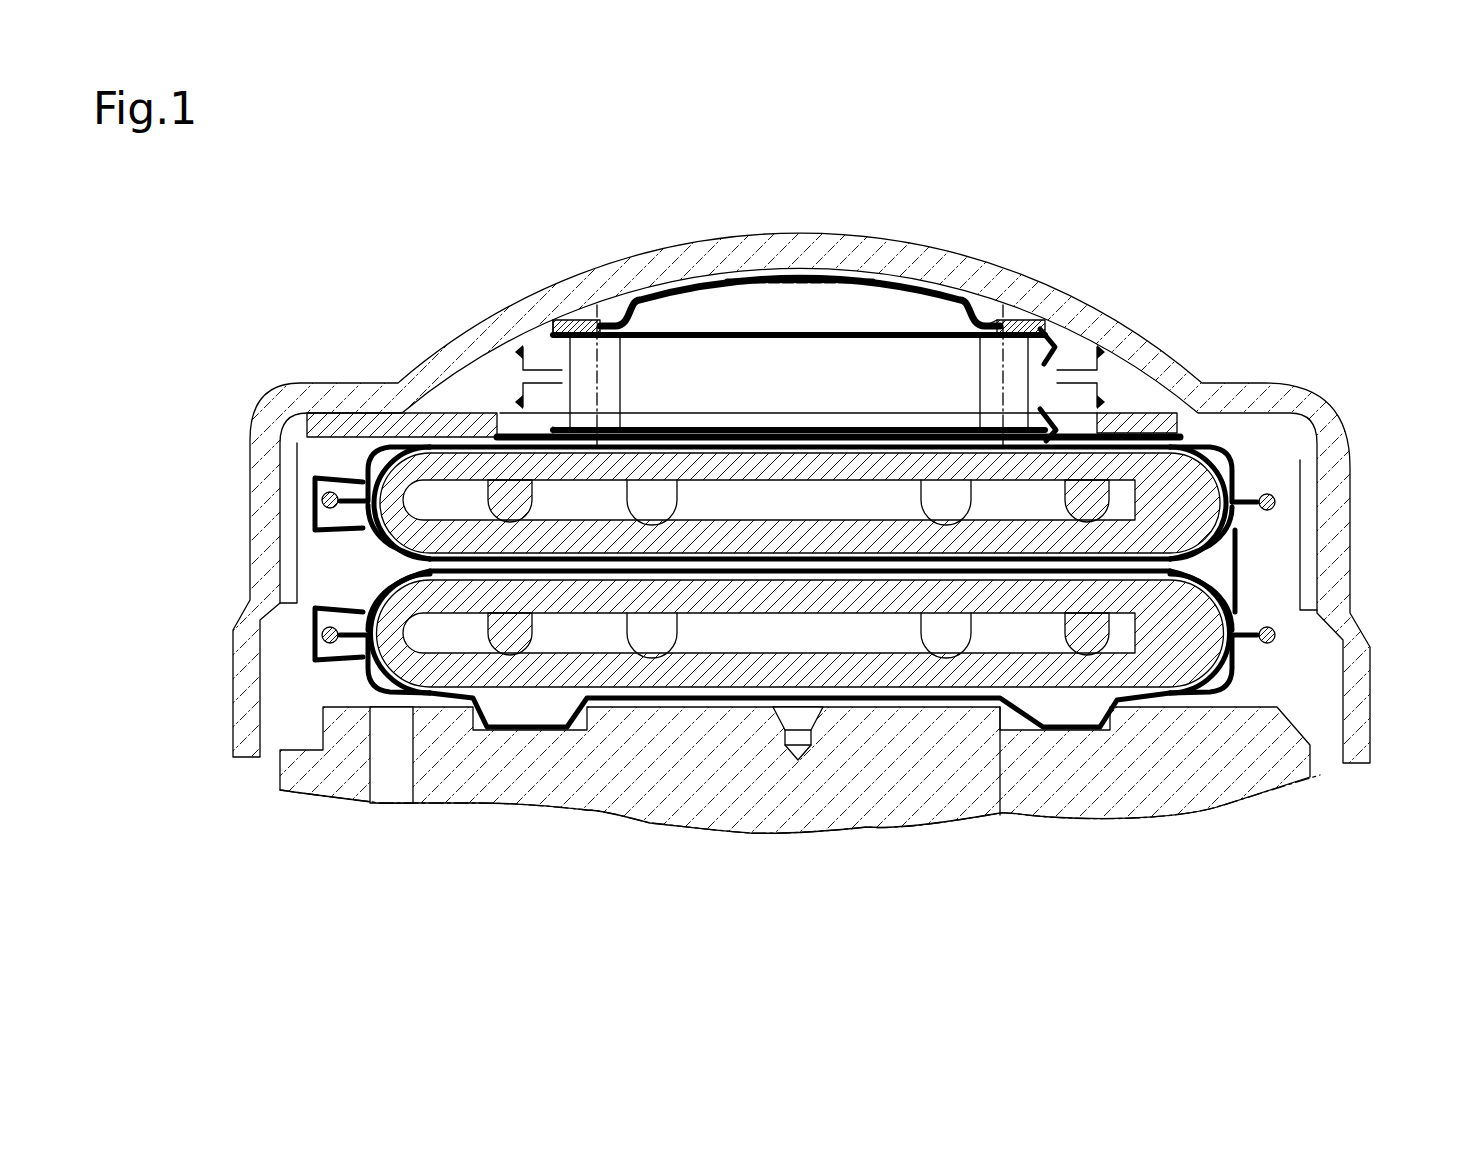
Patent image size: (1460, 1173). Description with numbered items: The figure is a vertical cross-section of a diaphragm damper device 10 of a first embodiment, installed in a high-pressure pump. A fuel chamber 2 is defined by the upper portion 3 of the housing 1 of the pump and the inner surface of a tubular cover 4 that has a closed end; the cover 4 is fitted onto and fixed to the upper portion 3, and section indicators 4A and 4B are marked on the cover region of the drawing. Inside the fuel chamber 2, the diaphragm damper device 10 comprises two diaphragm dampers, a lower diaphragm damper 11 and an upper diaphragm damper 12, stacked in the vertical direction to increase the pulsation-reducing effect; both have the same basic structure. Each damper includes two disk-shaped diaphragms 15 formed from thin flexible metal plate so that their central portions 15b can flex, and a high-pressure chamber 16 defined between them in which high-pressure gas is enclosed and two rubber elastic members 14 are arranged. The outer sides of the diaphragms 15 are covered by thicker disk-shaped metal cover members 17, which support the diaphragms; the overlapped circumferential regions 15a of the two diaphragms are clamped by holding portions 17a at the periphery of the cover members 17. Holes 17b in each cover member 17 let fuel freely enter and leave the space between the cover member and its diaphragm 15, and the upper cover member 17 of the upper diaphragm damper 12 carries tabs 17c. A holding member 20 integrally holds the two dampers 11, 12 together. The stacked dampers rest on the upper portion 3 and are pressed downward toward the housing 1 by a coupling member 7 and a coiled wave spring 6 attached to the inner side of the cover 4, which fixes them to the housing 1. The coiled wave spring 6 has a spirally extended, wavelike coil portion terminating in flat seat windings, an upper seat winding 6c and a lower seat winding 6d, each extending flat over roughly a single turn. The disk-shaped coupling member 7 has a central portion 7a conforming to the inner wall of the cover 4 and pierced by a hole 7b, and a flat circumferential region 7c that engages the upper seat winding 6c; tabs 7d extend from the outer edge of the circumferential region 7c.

The housing 1 is at (1027, 803).
The fuel chamber 2 is at (1300, 663).
The upper portion 3 is at (1253, 693).
The tubular cover 4 is at (850, 247).
The section line 4A is at (810, 357).
The section line 4B is at (810, 396).
The coiled wave spring 6 is at (678, 327).
The upper seat winding 6c is at (552, 330).
The lower seat winding 6d is at (503, 423).
The coupling member 7 is at (598, 305).
The central portion 7a is at (912, 292).
The hole 7b is at (753, 280).
The flat circumferential region 7c is at (645, 310).
The tabs 7d is at (1022, 317).
The diaphragm damper device 10 is at (1252, 465).
The lower diaphragm damper 11 is at (1300, 543).
The upper diaphragm damper 12 is at (1263, 620).
The rubber elastic members 14 is at (627, 537).
The disk-shaped diaphragms 15 is at (1152, 508).
The circumferential regions 15a is at (372, 497).
The central portions 15b is at (807, 435).
The high-pressure chamber 16 is at (1188, 508).
The cover members 17 is at (462, 430).
The holding portions 17a is at (350, 487).
The holes 17b is at (1218, 575).
The tabs 17c is at (1000, 413).
The holding member 20 is at (308, 618).